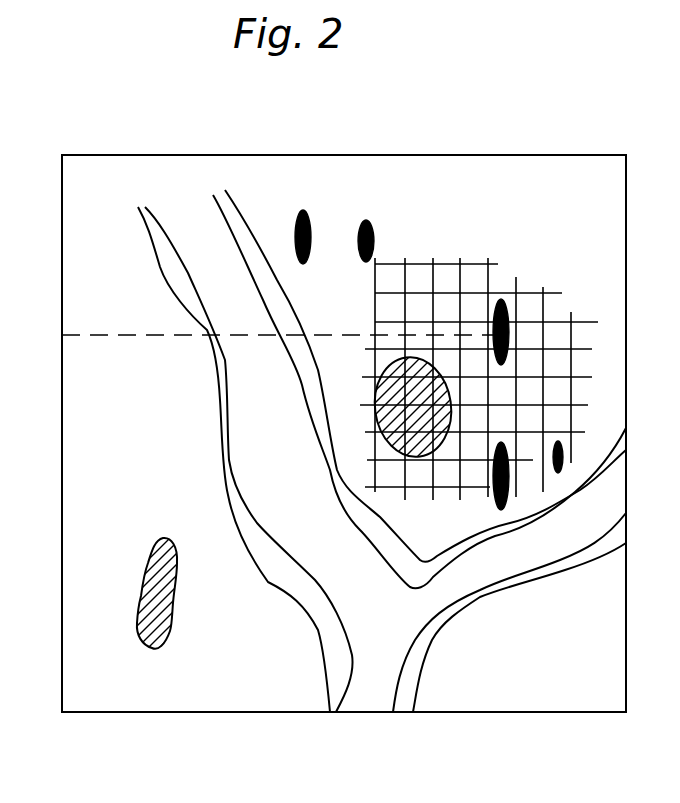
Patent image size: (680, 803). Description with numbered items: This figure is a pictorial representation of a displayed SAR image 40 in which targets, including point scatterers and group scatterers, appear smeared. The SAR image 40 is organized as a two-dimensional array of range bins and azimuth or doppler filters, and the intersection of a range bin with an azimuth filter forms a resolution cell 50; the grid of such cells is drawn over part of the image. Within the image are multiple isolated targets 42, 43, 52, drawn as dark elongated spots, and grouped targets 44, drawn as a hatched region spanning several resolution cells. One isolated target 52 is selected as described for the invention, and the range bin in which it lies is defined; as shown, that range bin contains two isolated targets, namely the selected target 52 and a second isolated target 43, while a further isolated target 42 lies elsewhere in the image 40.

The SAR image 40 is at (620, 712).
The isolated target 42 is at (567, 455).
The isolated target 43 is at (508, 477).
The grouped targets 44 is at (392, 381).
The resolution cell 50 is at (441, 303).
The isolated target 52 is at (511, 328).